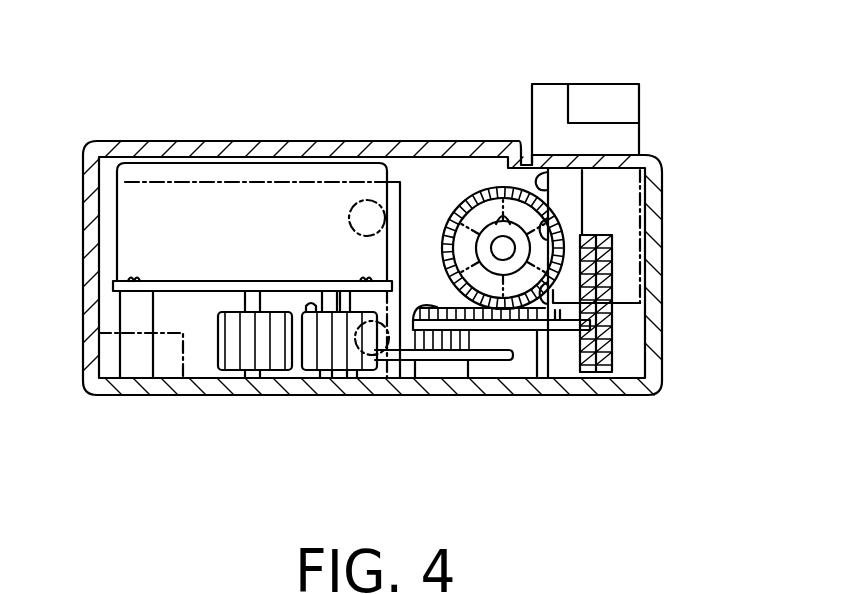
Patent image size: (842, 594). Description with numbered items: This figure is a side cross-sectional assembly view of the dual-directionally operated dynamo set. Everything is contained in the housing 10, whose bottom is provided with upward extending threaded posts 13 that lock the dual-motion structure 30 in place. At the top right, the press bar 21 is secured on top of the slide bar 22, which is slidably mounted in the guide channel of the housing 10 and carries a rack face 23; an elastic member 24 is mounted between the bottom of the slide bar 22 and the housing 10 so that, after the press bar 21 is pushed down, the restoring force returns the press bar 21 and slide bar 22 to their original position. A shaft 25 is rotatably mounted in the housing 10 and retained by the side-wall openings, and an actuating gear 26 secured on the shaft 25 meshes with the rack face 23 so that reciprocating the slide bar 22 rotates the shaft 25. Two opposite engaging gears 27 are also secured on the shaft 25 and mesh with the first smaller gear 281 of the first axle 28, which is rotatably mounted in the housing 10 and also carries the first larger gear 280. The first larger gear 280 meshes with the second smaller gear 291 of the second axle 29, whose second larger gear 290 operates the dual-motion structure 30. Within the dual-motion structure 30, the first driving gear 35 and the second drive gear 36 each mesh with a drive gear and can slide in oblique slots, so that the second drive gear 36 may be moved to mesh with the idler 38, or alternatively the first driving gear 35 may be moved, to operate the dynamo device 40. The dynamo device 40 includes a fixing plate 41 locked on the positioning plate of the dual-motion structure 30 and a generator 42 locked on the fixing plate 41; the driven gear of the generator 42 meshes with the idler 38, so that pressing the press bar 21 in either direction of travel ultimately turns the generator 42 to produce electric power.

The housing 10 is at (132, 390).
The threaded posts 13 is at (137, 312).
The press bar 21 is at (602, 98).
The slide bar 22 is at (623, 200).
The rack face 23 is at (535, 172).
The elastic member 24 is at (610, 262).
The shaft 25 is at (480, 238).
The actuating gear 26 is at (490, 190).
The engaging gears 27 is at (478, 222).
The first axle 28 is at (535, 348).
The first larger gear 280 is at (545, 330).
The first smaller gear 281 is at (585, 372).
The second axle 29 is at (445, 372).
The second larger gear 290 is at (490, 362).
The second smaller gear 291 is at (405, 335).
The dual-motion structure 30 is at (293, 362).
The first driving gear 35 is at (372, 356).
The second drive gear 36 is at (332, 358).
The idler 38 is at (225, 352).
The dynamo device 40 is at (228, 141).
The fixing plate 41 is at (108, 270).
The generator 42 is at (135, 198).